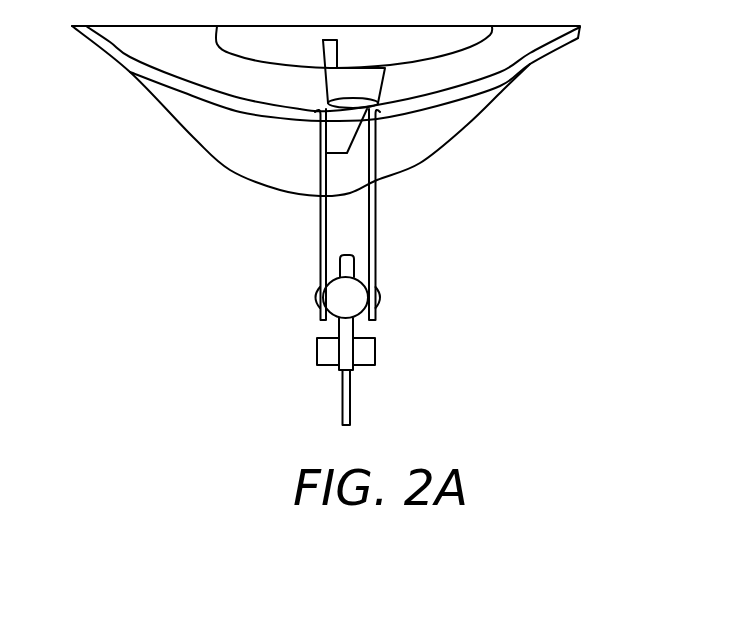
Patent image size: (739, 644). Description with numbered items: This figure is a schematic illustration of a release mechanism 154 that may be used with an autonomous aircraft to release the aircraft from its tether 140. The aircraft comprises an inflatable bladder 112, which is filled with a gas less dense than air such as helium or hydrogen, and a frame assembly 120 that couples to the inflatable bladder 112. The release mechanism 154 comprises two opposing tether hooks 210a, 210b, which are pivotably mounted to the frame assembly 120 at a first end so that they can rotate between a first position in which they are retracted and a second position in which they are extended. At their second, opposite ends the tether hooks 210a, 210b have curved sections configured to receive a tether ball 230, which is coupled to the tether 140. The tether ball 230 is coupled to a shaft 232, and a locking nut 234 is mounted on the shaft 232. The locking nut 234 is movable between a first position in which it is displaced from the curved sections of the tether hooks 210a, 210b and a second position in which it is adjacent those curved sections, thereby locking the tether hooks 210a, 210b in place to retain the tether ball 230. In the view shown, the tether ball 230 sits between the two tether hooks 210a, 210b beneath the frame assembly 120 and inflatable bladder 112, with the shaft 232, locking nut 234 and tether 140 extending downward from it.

The inflatable bladder 112 is at (190, 133).
The frame assembly 120 is at (532, 55).
The release mechanism 154 is at (452, 182).
The tether hook 210a is at (318, 232).
The tether hook 210b is at (377, 238).
The tether ball 230 is at (343, 305).
The shaft 232 is at (358, 323).
The locking nut 234 is at (376, 358).
The tether 140 is at (351, 397).